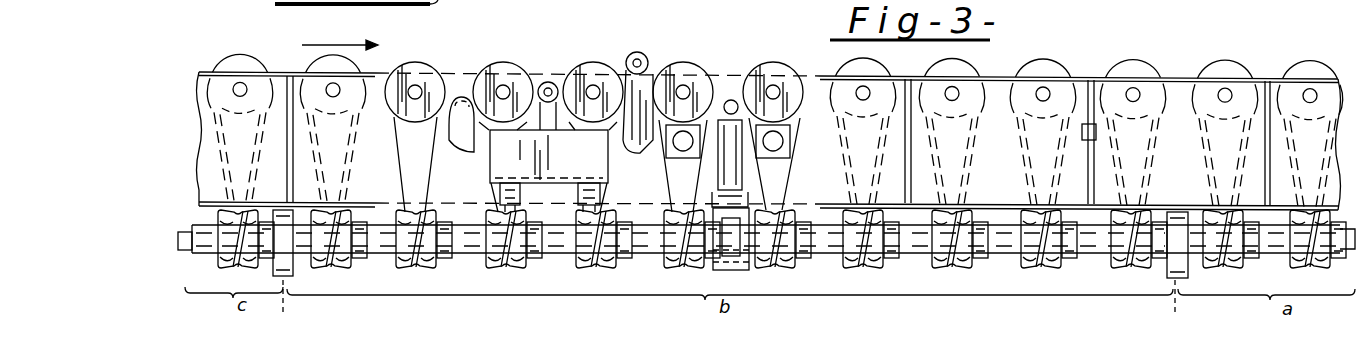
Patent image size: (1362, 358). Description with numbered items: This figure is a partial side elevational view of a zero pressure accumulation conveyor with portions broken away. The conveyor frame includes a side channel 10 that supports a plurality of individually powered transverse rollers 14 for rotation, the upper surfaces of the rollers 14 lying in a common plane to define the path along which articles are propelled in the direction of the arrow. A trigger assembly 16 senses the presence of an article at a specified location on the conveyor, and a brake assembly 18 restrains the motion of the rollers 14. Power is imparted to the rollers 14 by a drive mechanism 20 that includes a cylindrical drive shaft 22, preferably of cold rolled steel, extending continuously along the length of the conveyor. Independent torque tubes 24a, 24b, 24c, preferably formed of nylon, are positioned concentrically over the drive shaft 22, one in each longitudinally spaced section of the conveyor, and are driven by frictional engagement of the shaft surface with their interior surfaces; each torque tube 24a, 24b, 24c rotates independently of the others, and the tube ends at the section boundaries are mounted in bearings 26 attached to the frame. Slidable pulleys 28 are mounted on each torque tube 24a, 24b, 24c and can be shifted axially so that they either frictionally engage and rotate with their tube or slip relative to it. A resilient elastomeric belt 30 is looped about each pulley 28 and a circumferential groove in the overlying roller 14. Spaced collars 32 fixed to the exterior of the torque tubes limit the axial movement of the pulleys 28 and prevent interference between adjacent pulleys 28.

The side channel 10 is at (812, 74).
The transverse roller 14 is at (483, 64).
The trigger assembly 16 is at (614, 167).
The brake assembly 18 is at (724, 97).
The drive mechanism 20 is at (462, 270).
The drive shaft 22 is at (192, 226).
The torque tube 24a is at (1268, 258).
The torque tube 24b is at (650, 258).
The torque tube 24c is at (208, 258).
The bearing 26 is at (292, 266).
The slidable pulley 28 is at (350, 266).
The resilient belt 30 is at (433, 146).
The collar 32 is at (492, 188).